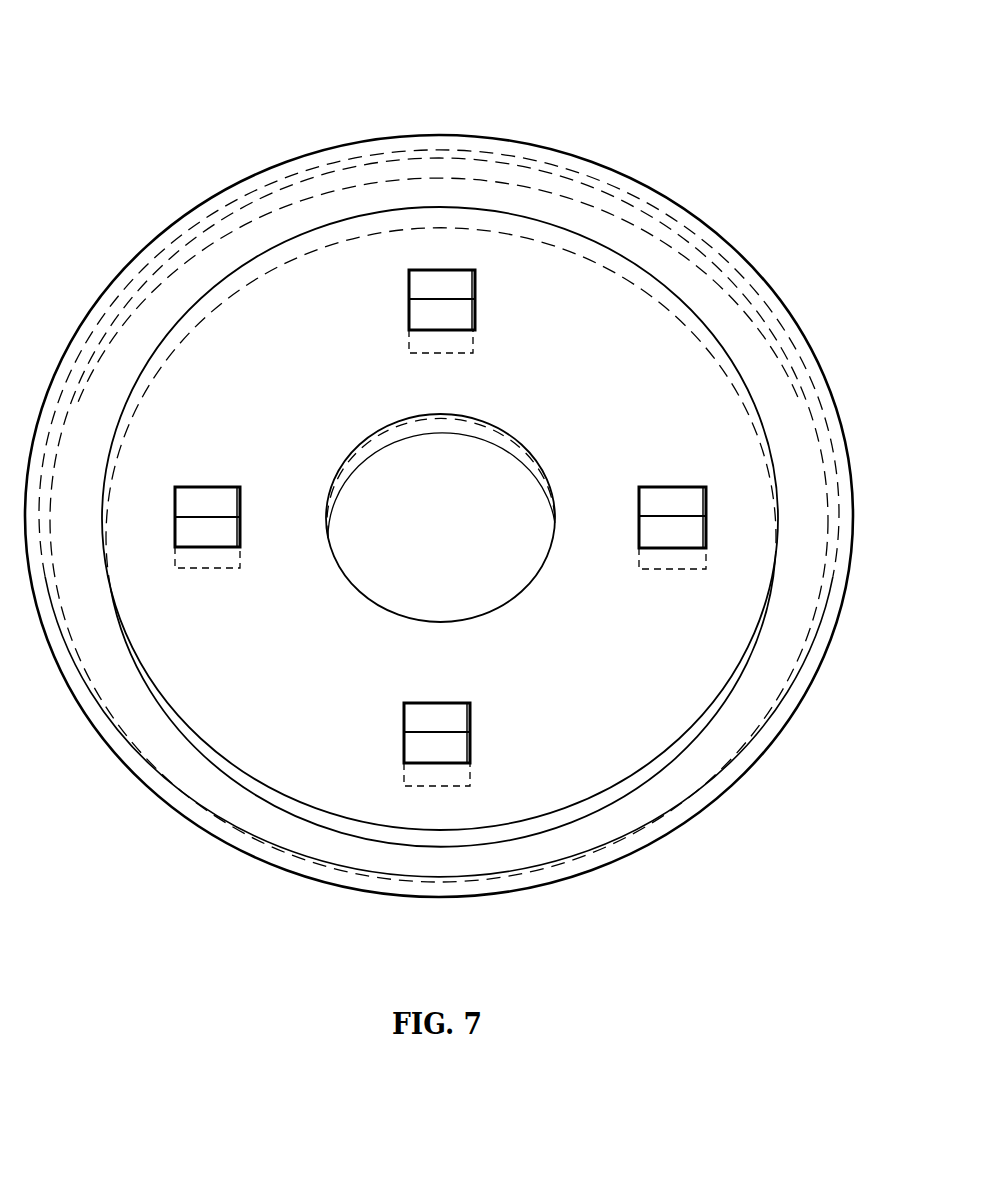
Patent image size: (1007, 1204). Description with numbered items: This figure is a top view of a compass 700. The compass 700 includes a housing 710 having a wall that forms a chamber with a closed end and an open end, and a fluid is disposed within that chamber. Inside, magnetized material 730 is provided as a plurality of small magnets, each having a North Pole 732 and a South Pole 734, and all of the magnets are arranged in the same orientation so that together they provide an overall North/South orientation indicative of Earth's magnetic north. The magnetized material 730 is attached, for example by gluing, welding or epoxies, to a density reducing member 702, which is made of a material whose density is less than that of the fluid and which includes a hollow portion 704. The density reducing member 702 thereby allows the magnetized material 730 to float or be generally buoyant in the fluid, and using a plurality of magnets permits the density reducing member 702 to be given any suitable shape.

The compass 700 is at (691, 118).
The density reducing member 702 is at (680, 292).
The hollow portion 704 is at (497, 578).
The housing 710 is at (288, 160).
The magnetized material 730 is at (463, 527).
The North Pole 732 is at (418, 282).
The South Pole 734 is at (460, 320).